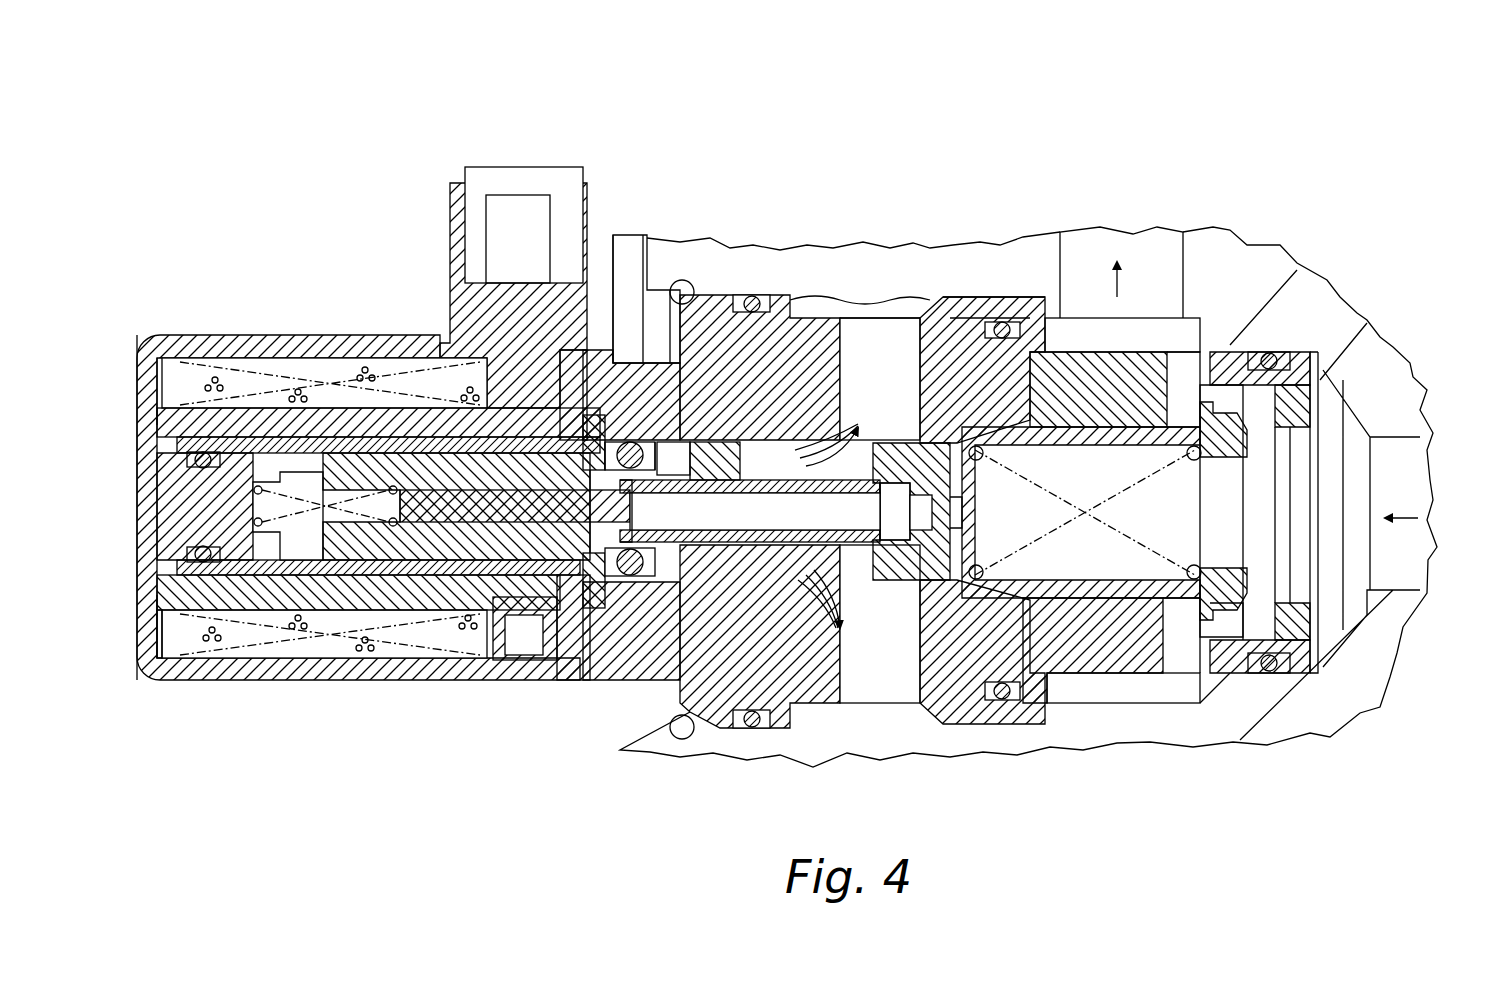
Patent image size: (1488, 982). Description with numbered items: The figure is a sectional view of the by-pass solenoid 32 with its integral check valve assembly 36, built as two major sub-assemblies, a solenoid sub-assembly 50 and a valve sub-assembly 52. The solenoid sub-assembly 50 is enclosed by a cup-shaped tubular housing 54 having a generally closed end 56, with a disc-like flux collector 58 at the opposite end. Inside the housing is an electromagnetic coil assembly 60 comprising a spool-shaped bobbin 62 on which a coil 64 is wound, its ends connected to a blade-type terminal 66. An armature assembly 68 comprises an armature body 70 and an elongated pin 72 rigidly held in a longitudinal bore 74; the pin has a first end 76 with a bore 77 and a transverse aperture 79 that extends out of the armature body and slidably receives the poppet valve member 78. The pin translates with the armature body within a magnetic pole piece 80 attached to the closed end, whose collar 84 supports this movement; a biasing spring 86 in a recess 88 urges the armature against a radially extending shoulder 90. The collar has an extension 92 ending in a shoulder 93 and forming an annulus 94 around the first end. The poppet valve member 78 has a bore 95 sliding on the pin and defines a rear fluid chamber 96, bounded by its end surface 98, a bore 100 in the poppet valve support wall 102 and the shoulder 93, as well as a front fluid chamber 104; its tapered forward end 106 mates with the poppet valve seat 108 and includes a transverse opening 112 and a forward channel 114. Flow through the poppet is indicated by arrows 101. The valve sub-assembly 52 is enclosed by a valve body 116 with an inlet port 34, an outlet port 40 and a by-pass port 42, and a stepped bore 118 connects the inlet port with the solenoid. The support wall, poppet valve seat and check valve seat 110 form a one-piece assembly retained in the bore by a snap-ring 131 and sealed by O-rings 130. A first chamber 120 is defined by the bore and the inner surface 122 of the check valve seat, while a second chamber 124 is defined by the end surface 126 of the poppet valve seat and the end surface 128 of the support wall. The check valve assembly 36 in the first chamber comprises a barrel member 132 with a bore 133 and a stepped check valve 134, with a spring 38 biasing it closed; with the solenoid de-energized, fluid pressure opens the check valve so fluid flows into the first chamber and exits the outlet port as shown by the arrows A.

The by-pass solenoid 32 is at (789, 115).
The inlet port 34 is at (1433, 450).
The check valve assembly 36 is at (1180, 405).
The spring 38 is at (1200, 445).
The outlet port 40 is at (1148, 230).
The by-pass port 42 is at (866, 305).
The solenoid sub-assembly 50 is at (326, 178).
The valve sub-assembly 52 is at (1004, 168).
The housing 54 is at (335, 660).
The closed end 56 is at (142, 665).
The flux collector 58 is at (533, 660).
The electromagnetic coil assembly 60 is at (287, 668).
The bobbin 62 is at (172, 660).
The coil 64 is at (220, 660).
The blade-type terminal 66 is at (516, 200).
The armature assembly 68 is at (430, 472).
The armature body 70 is at (405, 548).
The elongated pin 72 is at (457, 517).
The longitudinal bore 74 is at (527, 660).
The first end 76 is at (790, 600).
The bore 77 is at (745, 536).
The poppet valve member 78 is at (830, 316).
The transverse aperture 79 is at (632, 498).
The magnetic pole piece 80 is at (222, 360).
The collar 84 is at (293, 565).
The biasing spring 86 is at (203, 467).
The recess 88 is at (300, 480).
The shoulder 90 is at (600, 660).
The extension 92 is at (615, 650).
The shoulder 93 is at (648, 300).
The annulus 94 is at (700, 390).
The bore 95 is at (760, 488).
The rear fluid chamber 96 is at (655, 600).
The end surface 98 is at (640, 560).
The bore 100 is at (750, 390).
The fluid flow 101 is at (851, 525).
The poppet valve support wall 102 is at (600, 350).
The front fluid chamber 104 is at (892, 520).
The tapered forward end 106 is at (950, 537).
The poppet valve seat 108 is at (963, 478).
The check valve seat 110 is at (1280, 432).
The transverse opening 112 is at (873, 547).
The forward channel 114 is at (950, 513).
The valve body 116 is at (1233, 348).
The stepped bore 118 is at (1142, 690).
The first chamber 120 is at (1255, 412).
The inner surface 122 is at (1253, 625).
The second chamber 124 is at (930, 330).
The end surface 126 is at (920, 375).
The end surface 128 is at (843, 373).
The O-ring 130 is at (752, 296).
The snap-ring 131 is at (682, 280).
The barrel member 132 is at (1100, 615).
The bore 133 is at (1080, 445).
The stepped check valve 134 is at (1232, 677).